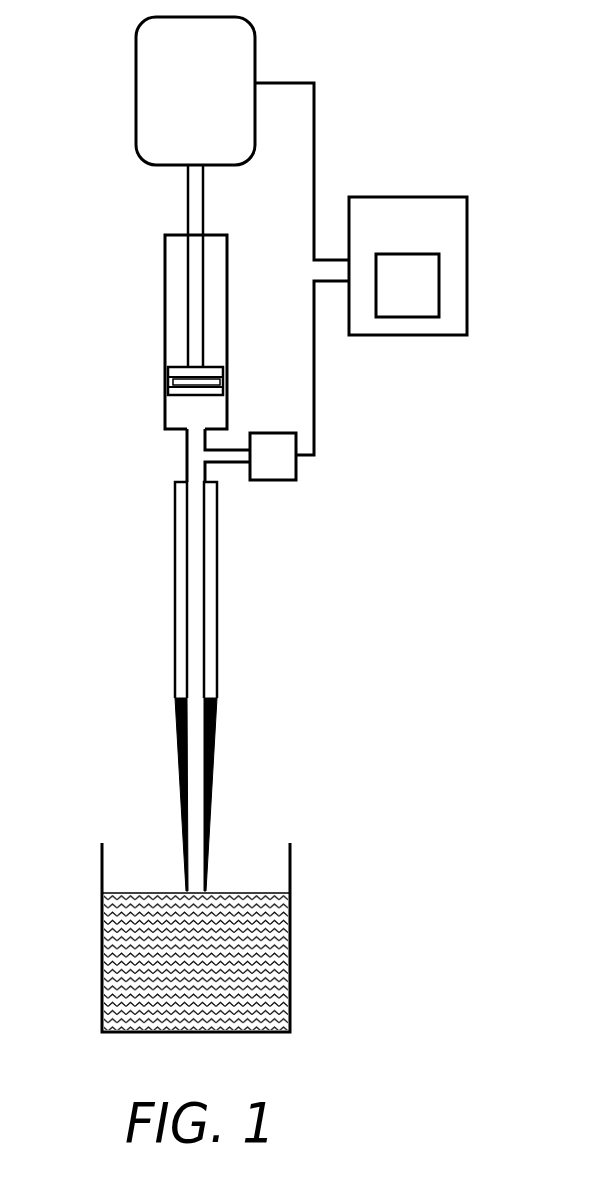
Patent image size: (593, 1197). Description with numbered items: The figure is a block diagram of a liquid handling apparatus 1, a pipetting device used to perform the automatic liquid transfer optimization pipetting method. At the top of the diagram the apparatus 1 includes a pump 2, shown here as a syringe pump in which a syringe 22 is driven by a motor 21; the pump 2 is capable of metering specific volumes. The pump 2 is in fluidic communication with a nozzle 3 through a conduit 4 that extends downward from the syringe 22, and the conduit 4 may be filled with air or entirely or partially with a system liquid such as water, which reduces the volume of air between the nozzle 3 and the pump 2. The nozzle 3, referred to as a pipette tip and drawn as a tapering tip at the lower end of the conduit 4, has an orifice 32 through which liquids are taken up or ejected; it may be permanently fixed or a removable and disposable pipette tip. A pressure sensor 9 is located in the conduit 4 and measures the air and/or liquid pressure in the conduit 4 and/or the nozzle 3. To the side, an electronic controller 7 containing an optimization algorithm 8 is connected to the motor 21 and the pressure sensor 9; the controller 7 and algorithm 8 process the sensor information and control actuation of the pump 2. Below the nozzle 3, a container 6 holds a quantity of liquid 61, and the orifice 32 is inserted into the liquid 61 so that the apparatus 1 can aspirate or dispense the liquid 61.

The liquid handling apparatus 1 is at (500, 123).
The pump 2 is at (82, 23).
The motor 21 is at (181, 105).
The syringe 22 is at (165, 335).
The nozzle 3 is at (267, 705).
The orifice 32 is at (197, 879).
The conduit 4 is at (195, 591).
The container 6 is at (88, 962).
The liquid 61 is at (183, 975).
The electronic controller 7 is at (398, 228).
The optimization algorithm 8 is at (398, 299).
The pressure sensor 9 is at (265, 470).